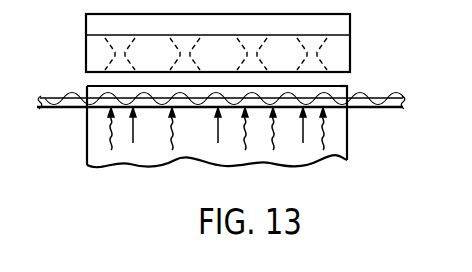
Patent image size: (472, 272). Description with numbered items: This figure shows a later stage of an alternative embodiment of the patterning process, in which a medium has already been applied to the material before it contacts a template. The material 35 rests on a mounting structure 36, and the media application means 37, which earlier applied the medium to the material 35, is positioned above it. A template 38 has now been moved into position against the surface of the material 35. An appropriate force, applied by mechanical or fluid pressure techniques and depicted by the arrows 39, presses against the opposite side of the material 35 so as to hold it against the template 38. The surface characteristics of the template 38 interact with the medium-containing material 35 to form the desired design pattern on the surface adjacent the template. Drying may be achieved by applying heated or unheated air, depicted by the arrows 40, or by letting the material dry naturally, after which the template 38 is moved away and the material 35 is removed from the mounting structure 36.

The material 35 is at (385, 97).
The mounting structure 36 is at (368, 126).
The media application means 37 is at (363, 50).
The template 38 is at (349, 87).
The arrows 39 is at (133, 128).
The arrows 40 is at (172, 140).